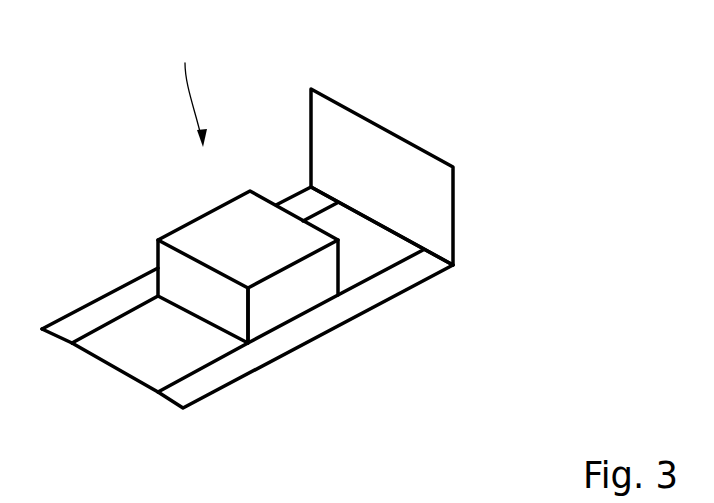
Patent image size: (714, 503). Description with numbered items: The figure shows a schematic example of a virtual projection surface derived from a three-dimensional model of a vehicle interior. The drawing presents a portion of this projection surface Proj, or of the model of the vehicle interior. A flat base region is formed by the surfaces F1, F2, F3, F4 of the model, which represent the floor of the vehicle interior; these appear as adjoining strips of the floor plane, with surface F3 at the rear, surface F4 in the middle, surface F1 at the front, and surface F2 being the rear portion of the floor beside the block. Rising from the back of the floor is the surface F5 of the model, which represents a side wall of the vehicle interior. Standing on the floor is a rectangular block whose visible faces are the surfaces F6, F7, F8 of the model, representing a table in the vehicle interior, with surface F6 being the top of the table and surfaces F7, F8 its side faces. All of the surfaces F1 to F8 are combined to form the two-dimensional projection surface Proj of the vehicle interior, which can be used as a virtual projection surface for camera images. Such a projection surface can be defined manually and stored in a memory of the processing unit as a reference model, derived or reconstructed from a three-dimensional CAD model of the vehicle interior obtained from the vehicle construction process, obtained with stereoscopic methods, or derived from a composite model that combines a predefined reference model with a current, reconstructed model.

The floor surface F1 is at (220, 375).
The floor surface F2 is at (360, 268).
The floor surface F3 is at (68, 330).
The floor surface F4 is at (145, 363).
The side wall surface F5 is at (328, 165).
The table surface F6 is at (210, 237).
The table surface F7 is at (182, 285).
The table surface F8 is at (290, 297).
The projection surface Proj is at (183, 85).